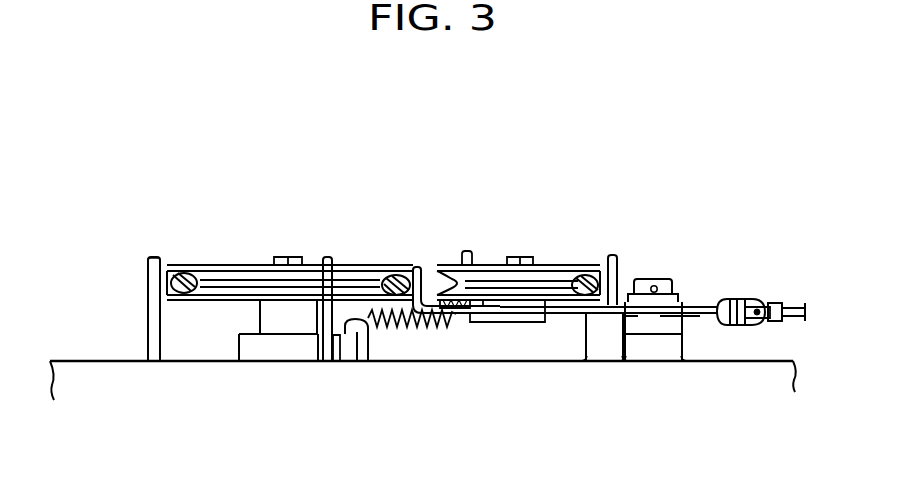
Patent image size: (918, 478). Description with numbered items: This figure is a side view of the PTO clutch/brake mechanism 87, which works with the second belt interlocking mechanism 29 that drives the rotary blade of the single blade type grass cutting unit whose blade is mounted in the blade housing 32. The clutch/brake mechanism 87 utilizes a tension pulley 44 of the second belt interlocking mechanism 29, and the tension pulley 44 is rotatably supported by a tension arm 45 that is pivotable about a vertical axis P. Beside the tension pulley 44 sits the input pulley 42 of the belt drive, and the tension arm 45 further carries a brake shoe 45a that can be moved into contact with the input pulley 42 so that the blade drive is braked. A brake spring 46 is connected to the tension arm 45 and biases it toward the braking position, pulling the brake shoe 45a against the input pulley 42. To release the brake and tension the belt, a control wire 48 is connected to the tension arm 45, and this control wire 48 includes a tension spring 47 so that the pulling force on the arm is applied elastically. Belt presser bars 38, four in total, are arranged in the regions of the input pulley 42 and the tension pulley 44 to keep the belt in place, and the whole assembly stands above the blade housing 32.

The second belt interlocking mechanism 29 is at (152, 197).
The blade housing 32 is at (90, 358).
The belt presser bars 38 is at (143, 266).
The input pulley 42 is at (212, 263).
The tension pulley 44 is at (558, 263).
The tension arm 45 is at (587, 315).
The brake shoe 45a is at (412, 263).
The brake spring 46 is at (387, 332).
The tension spring 47 is at (742, 298).
The control wire 48 is at (790, 301).
The PTO clutch/brake mechanism 87 is at (417, 218).
The vertical axis P is at (654, 276).